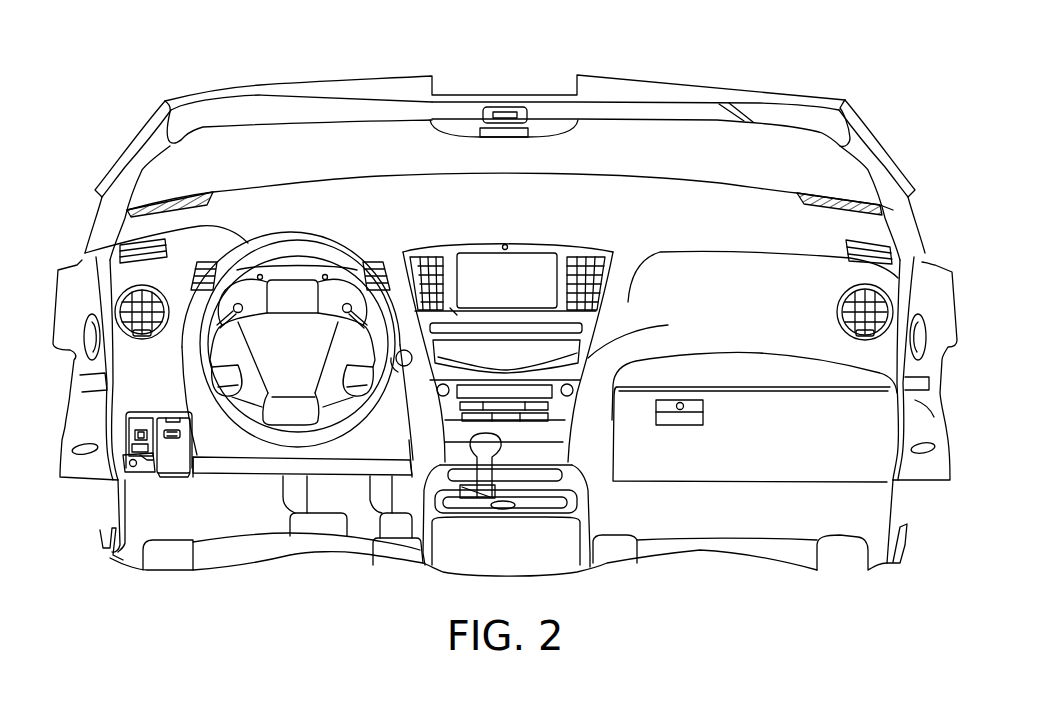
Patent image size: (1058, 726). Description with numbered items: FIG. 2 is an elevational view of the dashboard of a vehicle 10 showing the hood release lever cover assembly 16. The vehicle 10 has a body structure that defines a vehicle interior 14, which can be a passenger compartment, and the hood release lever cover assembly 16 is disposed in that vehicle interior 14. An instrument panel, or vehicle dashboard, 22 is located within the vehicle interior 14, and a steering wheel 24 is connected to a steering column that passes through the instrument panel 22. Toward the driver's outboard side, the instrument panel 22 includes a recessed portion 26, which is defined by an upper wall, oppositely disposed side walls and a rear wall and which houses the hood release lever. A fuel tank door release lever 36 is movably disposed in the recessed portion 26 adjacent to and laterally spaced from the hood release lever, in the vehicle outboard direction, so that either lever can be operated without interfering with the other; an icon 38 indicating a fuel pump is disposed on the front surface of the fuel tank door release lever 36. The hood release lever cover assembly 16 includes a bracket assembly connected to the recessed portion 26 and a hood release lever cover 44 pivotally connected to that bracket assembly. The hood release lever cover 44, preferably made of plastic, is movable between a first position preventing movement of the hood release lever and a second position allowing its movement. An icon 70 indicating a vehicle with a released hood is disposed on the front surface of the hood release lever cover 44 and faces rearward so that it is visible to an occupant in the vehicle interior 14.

The vehicle 10 is at (750, 86).
The vehicle interior 14 is at (692, 212).
The instrument panel 22 is at (310, 207).
The steering wheel 24 is at (248, 250).
The recessed portion 26 is at (138, 417).
The icon 70 is at (173, 428).
The icon 38 is at (137, 438).
The fuel tank door release lever 36 is at (136, 445).
The hood release lever cover assembly 16 is at (165, 483).
The hood release lever cover 44 is at (173, 460).